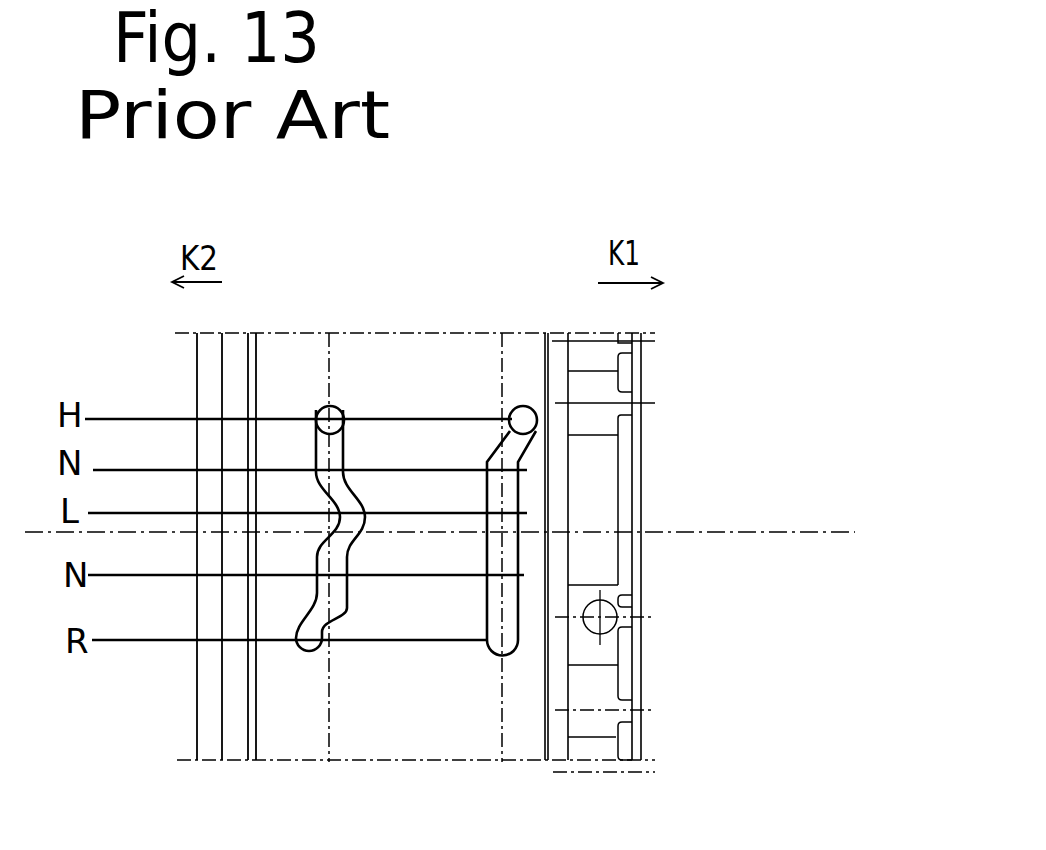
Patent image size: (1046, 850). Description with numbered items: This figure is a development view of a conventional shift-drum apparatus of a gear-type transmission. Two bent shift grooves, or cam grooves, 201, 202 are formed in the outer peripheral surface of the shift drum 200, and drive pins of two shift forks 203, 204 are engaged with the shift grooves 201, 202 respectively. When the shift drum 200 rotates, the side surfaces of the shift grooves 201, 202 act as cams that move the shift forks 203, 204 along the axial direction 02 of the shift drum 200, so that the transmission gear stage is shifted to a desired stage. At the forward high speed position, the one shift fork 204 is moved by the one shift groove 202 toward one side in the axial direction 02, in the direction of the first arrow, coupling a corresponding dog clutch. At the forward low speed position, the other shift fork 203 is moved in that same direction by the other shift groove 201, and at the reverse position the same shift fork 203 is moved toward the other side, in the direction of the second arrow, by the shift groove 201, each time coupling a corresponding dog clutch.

The shift drum 200 is at (664, 521).
The shift groove 201 is at (317, 452).
The shift groove 202 is at (515, 555).
The shift fork 203 is at (325, 407).
The shift fork 204 is at (533, 419).
The axial direction 02 is at (735, 533).